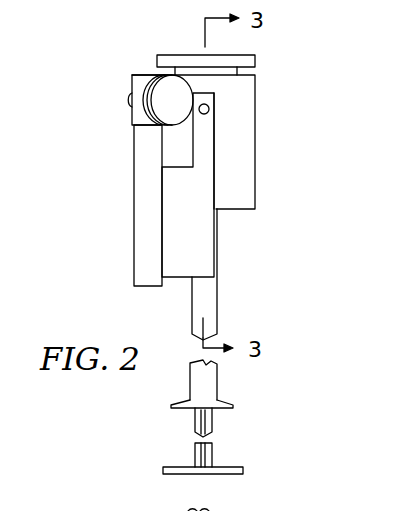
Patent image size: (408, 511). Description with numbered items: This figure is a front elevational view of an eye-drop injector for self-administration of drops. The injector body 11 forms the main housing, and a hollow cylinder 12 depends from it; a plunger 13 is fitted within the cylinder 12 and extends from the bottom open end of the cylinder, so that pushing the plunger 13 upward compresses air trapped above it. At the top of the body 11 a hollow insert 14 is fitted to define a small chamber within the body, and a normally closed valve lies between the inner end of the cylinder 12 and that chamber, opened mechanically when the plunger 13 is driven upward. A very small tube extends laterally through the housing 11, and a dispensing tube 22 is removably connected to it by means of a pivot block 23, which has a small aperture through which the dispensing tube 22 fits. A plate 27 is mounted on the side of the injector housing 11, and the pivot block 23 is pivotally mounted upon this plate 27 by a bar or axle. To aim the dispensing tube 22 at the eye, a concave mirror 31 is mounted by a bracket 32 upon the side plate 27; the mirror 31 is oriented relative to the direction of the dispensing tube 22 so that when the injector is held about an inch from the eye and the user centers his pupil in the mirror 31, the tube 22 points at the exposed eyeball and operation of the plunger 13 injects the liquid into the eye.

The injector body 11 is at (256, 153).
The hollow cylinder 12 is at (218, 313).
The plunger 13 is at (213, 454).
The hollow insert 14 is at (256, 65).
The dispensing tube 22 is at (210, 108).
The pivot block 23 is at (202, 252).
The plate 27 is at (134, 193).
The concave mirror 31 is at (170, 100).
The bracket 32 is at (131, 82).